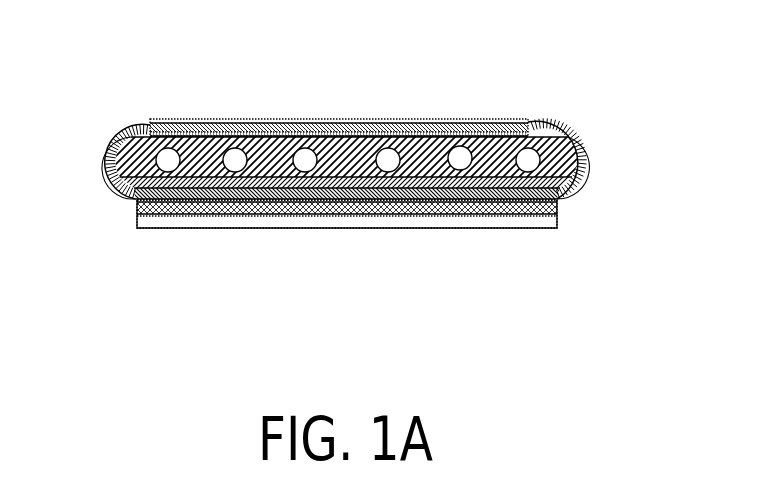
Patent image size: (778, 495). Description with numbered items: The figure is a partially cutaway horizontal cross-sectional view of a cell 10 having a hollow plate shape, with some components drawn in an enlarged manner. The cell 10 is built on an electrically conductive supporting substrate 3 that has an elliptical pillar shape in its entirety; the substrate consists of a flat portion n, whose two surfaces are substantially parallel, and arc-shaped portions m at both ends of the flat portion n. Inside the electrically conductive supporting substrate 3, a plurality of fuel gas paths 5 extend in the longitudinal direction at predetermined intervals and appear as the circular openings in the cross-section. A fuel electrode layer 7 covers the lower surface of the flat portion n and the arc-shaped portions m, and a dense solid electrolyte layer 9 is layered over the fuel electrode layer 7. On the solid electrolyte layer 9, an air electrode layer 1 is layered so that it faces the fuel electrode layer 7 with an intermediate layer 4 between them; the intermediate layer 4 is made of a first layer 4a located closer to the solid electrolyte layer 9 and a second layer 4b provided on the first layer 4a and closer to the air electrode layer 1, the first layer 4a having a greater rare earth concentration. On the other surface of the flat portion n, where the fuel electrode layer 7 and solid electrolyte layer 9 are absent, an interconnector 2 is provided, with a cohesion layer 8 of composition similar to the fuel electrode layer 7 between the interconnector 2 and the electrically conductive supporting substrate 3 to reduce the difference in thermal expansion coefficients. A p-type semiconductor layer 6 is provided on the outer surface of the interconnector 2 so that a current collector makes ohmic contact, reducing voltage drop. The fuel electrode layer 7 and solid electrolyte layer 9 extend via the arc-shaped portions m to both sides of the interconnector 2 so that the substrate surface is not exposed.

The air electrode layer 1 is at (177, 218).
The interconnector 2 is at (203, 128).
The electrically conductive supporting substrate 3 is at (577, 187).
The intermediate layer 4 is at (347, 283).
The first layer 4a is at (308, 303).
The second layer 4b is at (240, 215).
The fuel gas paths 5 is at (302, 153).
The p-type semiconductor layer 6 is at (300, 132).
The fuel electrode layer 7 is at (482, 195).
The cohesion layer 8 is at (482, 135).
The solid electrolyte layer 9 is at (425, 199).
The cell 10 is at (346, 195).
The flat portion n is at (420, 145).
The arc-shaped portions m is at (120, 157).